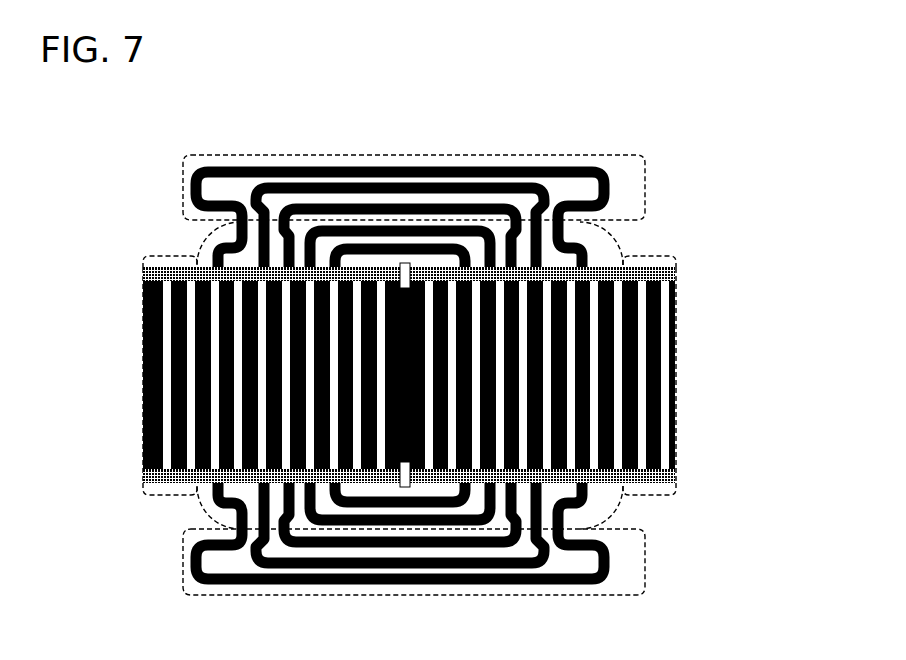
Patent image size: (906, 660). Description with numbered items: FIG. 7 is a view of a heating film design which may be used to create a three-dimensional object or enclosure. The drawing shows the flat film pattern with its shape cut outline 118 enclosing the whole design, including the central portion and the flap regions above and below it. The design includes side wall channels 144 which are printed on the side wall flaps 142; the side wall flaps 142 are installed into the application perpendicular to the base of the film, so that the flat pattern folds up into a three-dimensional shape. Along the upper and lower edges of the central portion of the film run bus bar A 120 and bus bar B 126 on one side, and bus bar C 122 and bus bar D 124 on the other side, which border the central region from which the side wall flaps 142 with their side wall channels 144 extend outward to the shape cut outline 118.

The shape cut outline 118 is at (413, 155).
The bus bar A 120 is at (676, 275).
The bus bar C 122 is at (676, 476).
The bus bar D 124 is at (143, 482).
The bus bar B 126 is at (143, 274).
The side wall flaps 142 is at (647, 258).
The side wall channels 144 is at (177, 268).